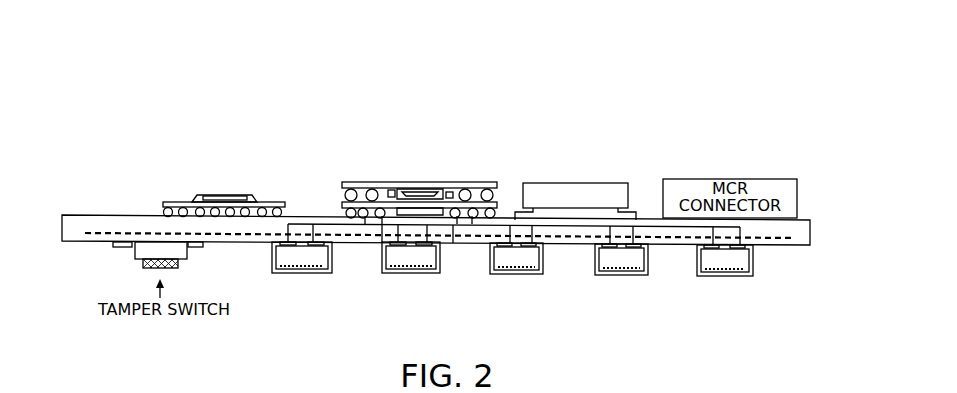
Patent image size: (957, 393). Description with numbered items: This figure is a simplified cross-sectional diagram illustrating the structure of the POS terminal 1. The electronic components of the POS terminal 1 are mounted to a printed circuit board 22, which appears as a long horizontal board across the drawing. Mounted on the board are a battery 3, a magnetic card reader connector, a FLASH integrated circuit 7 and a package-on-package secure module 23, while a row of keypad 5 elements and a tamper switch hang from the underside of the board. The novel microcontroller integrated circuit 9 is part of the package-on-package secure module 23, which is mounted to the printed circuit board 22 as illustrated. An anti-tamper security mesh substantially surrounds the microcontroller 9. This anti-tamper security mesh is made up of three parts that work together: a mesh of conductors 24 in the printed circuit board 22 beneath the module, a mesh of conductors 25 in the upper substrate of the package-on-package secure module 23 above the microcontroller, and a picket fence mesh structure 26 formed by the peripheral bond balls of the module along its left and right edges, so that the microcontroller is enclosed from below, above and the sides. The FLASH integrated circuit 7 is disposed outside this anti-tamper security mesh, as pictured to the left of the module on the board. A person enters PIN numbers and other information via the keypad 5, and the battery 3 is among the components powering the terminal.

The POS terminal 1 is at (142, 90).
The battery 3 is at (606, 183).
The keypad 5 is at (618, 277).
The FLASH integrated circuit 7 is at (223, 172).
The microcontroller integrated circuit 9 is at (428, 220).
The printed circuit board 22 is at (811, 247).
The package-on-package secure module 23 is at (411, 201).
The mesh of conductors 24 is at (348, 238).
The mesh of conductors 25 is at (418, 181).
The picket fence mesh structure 26 is at (516, 191).